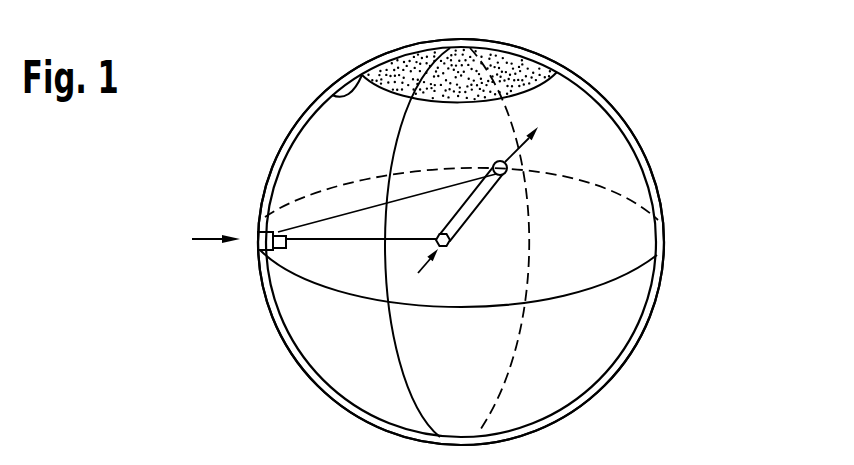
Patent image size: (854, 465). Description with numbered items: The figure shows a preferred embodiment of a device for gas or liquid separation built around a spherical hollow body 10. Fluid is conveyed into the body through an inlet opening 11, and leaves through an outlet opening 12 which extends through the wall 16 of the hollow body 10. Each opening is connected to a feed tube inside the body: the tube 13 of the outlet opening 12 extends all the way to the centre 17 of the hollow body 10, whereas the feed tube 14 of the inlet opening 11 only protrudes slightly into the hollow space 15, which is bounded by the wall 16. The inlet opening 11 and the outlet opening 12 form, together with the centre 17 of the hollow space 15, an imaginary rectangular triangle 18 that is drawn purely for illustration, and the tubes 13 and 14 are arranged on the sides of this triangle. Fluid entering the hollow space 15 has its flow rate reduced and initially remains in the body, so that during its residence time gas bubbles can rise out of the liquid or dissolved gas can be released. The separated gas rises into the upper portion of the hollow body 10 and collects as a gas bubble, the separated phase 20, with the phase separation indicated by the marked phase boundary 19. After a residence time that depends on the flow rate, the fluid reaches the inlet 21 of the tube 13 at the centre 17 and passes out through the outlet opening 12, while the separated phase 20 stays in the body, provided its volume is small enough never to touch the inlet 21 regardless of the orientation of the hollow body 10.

The hollow body 10 is at (633, 353).
The inlet opening 11 is at (255, 231).
The outlet opening 12 is at (522, 158).
The tube 13 is at (497, 198).
The feed tube 14 is at (268, 253).
The hollow space 15 is at (630, 178).
The wall 16 is at (610, 98).
The centre 17 is at (452, 251).
The imaginary rectangular triangle 18 is at (360, 212).
The phase boundary 19 is at (332, 93).
The separated phase 20 is at (520, 73).
The inlet of the tube 21 is at (453, 240).